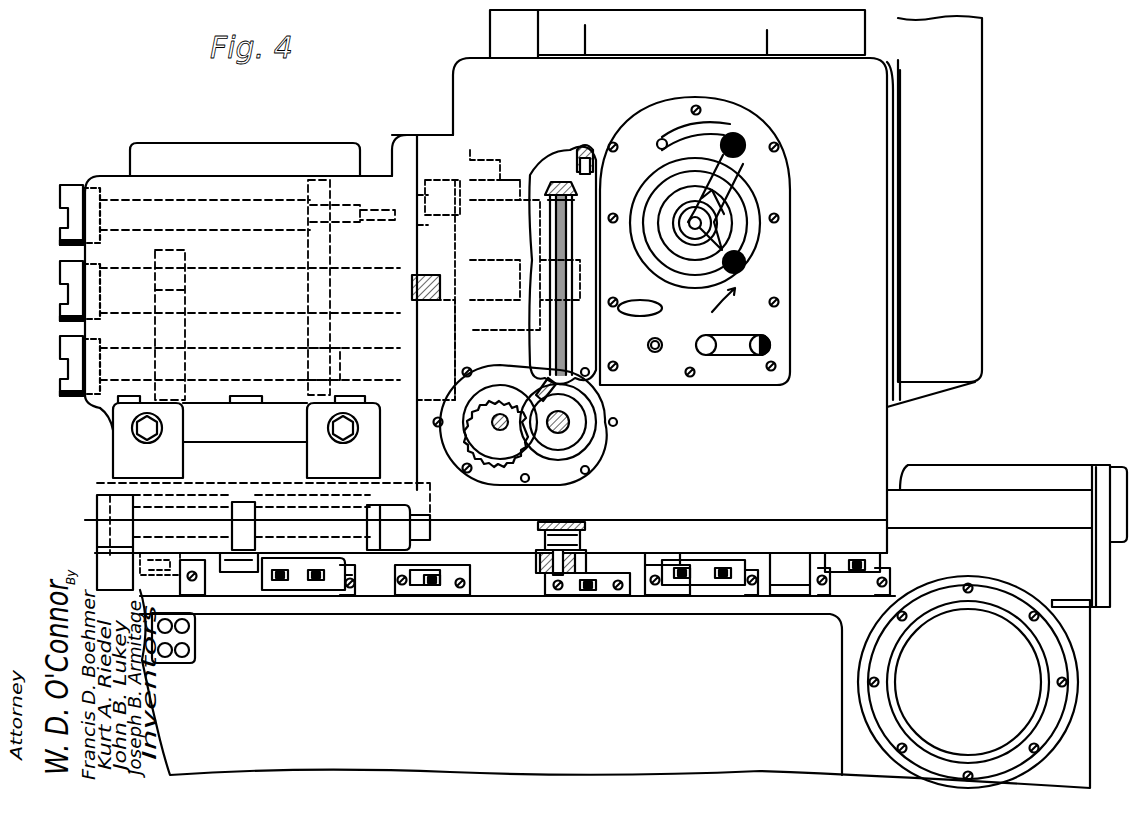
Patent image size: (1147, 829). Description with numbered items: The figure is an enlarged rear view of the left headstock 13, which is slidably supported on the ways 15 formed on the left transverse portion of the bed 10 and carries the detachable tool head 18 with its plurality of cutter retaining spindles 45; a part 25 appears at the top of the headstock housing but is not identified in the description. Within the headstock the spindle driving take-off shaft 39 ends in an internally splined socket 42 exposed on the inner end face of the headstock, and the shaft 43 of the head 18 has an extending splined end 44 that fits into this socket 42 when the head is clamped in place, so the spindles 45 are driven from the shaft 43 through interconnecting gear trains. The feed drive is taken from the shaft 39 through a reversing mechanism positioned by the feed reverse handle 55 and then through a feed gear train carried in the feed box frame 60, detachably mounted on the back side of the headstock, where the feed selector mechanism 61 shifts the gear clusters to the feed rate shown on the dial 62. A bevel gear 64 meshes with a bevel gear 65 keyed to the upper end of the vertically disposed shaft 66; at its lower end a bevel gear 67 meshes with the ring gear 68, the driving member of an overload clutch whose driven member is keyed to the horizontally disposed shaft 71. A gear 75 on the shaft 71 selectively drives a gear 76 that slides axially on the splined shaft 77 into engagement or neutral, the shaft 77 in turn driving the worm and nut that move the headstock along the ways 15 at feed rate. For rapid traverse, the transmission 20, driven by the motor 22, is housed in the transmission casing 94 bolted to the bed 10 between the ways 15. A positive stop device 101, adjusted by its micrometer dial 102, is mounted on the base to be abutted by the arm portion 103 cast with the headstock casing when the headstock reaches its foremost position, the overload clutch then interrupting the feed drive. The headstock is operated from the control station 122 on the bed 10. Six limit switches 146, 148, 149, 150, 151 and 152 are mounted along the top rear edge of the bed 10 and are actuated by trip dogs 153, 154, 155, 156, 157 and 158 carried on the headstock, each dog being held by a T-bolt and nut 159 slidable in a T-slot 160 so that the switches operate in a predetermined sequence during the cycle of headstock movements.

The bed 10 is at (1078, 760).
The left headstock 13 is at (906, 422).
The ways 15 is at (985, 508).
The detachable tool head 18 is at (256, 155).
The rapid traverse transmission 20 is at (1047, 458).
The motor 22 is at (1000, 605).
The top plate 25 is at (737, 45).
The spindle driving take-off shaft 39 is at (495, 274).
The internally splined socket 42 is at (434, 297).
The shaft 43 is at (225, 282).
The splined end 44 is at (428, 275).
The cutter retaining spindles 45 is at (49, 192).
The feed reverse handle 55 is at (645, 316).
The feed box frame 60 is at (790, 157).
The feed selector mechanism 61 is at (710, 304).
The dial 62 is at (725, 220).
The bevel gear 64 is at (586, 150).
The bevel gear 65 is at (557, 177).
The vertically disposed shaft 66 is at (574, 280).
The bevel gear 67 is at (530, 360).
The ring gear 68 is at (580, 392).
The horizontally disposed shaft 71 is at (570, 426).
The gear 75 is at (538, 392).
The gear 76 is at (508, 447).
The splined shaft 77 is at (492, 425).
The transmission casing 94 is at (963, 482).
The positive stop device 101 is at (370, 505).
The micrometer dial 102 is at (244, 510).
The extending arm portion 103 is at (435, 505).
The control station 122 is at (209, 675).
The limit switch 146 is at (885, 560).
The limit switch 148 is at (722, 560).
The limit switch 149 is at (570, 592).
The limit switch 150 is at (300, 585).
The limit switch 151 is at (195, 570).
The limit switch 152 is at (448, 592).
The trip dog 153 is at (578, 563).
The trip dog 154 is at (798, 558).
The trip dog 155 is at (248, 553).
The trip dog 156 is at (152, 553).
The trip dog 157 is at (105, 548).
The trip dog 158 is at (668, 556).
The T-bolt and nut 159 is at (536, 548).
The T-slot 160 is at (575, 538).